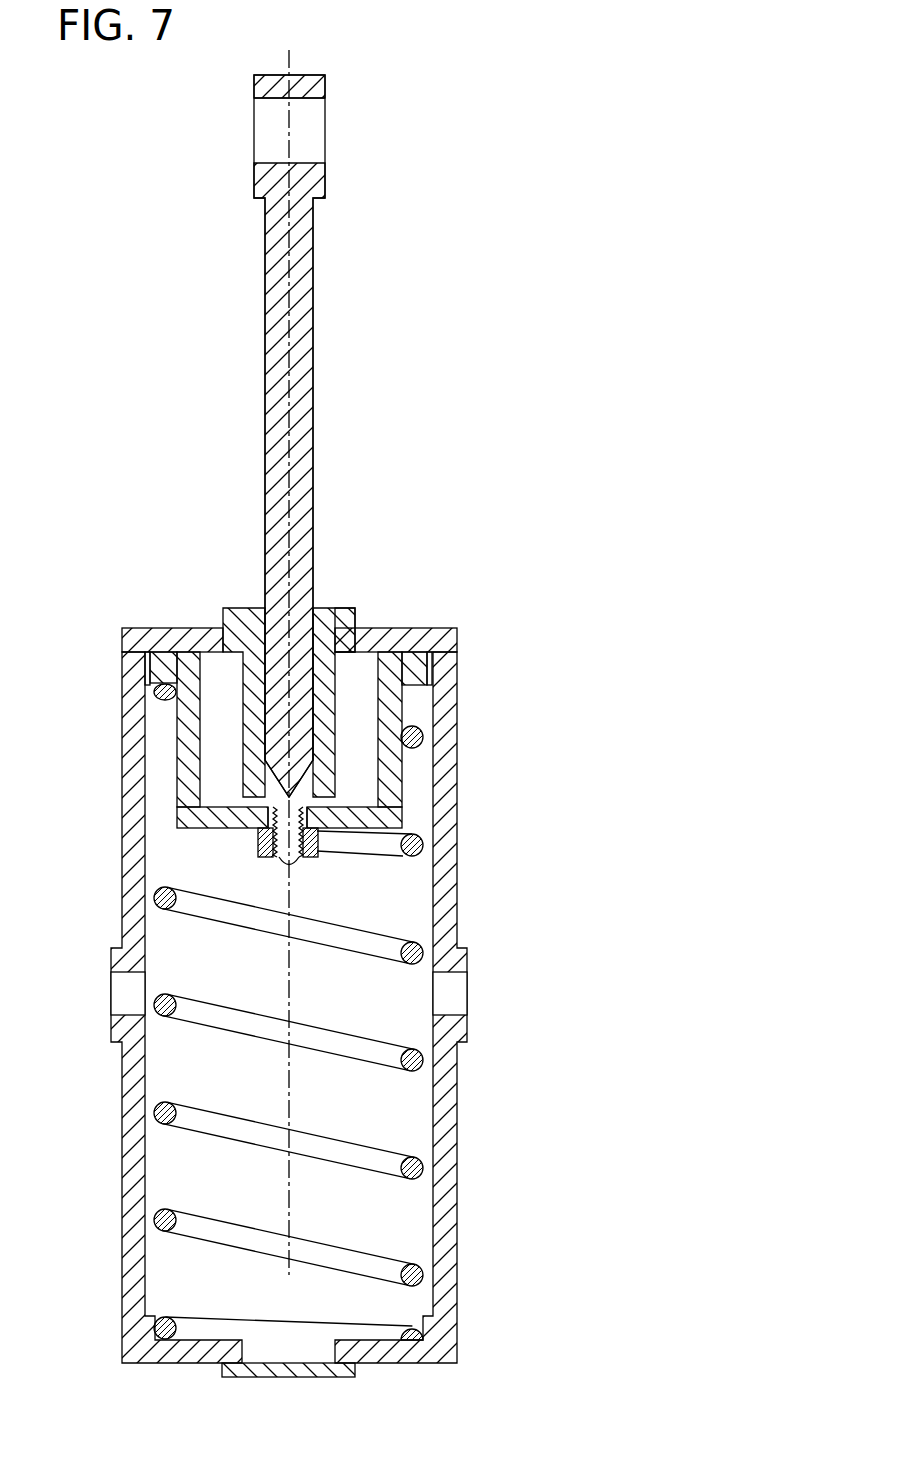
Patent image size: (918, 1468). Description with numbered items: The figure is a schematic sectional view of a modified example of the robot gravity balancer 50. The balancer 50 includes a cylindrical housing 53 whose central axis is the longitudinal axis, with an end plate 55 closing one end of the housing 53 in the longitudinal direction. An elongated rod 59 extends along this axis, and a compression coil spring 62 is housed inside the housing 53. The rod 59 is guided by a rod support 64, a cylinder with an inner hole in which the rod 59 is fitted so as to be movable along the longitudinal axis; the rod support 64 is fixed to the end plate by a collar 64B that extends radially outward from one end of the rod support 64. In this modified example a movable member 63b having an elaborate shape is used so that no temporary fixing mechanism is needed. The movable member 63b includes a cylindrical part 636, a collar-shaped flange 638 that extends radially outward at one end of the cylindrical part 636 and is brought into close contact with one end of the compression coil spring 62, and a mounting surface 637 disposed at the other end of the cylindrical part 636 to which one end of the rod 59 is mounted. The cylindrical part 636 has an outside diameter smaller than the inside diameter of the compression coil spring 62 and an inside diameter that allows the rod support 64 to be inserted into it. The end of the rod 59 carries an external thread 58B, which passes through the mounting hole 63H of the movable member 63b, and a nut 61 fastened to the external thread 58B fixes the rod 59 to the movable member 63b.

The balancer 50 is at (520, 157).
The housing 53 is at (506, 1133).
The end plate 55 is at (145, 628).
The rod 59 is at (361, 393).
The nut 61 is at (318, 847).
The compression coil spring 62 is at (156, 1103).
The rod support 64 is at (282, 648).
The collar 64B is at (330, 608).
The movable member 63b is at (381, 784).
The cylindrical part 636 is at (403, 768).
The mounting surface 637 is at (377, 830).
The flange 638 is at (427, 665).
The mounting hole 63H is at (296, 858).
The external thread 58B is at (282, 857).